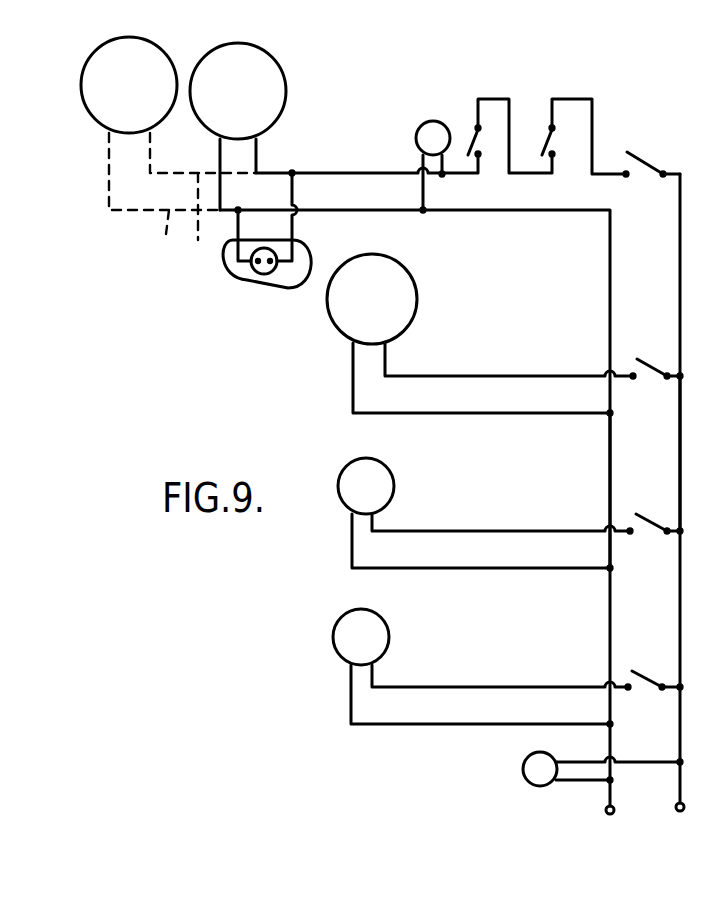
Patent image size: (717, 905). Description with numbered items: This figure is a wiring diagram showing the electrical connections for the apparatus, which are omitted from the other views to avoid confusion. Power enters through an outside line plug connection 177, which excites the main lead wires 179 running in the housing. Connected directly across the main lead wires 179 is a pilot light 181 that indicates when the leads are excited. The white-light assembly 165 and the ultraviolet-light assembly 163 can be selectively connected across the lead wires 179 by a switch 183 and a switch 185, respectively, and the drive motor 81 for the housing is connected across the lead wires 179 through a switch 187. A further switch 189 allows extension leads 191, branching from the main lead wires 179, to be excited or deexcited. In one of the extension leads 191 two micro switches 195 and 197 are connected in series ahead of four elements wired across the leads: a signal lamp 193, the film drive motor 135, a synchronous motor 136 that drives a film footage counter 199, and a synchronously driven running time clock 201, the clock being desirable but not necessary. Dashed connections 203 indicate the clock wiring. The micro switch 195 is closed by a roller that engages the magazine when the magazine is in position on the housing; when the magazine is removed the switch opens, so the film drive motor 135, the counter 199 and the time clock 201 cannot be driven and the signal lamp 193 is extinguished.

The time clock 201 is at (107, 53).
The film drive motor 135 is at (285, 96).
The signal lamp 193 is at (442, 122).
The micro switch 195 is at (468, 143).
The micro switch 197 is at (526, 143).
The switch 189 is at (650, 167).
The extension leads 191 is at (379, 173).
The clock leads 203 is at (182, 196).
The synchronous motor 136 is at (252, 272).
The film footage counter 199 is at (276, 289).
The drive motor 81 is at (418, 309).
The switch 187 is at (648, 372).
The main lead wires 179 is at (680, 465).
The ultraviolet-light assembly 163 is at (393, 488).
The switch 185 is at (650, 537).
The white-light assembly 165 is at (386, 632).
The switch 183 is at (645, 676).
The pilot light 181 is at (527, 778).
The outside line plug connection 177 is at (676, 812).